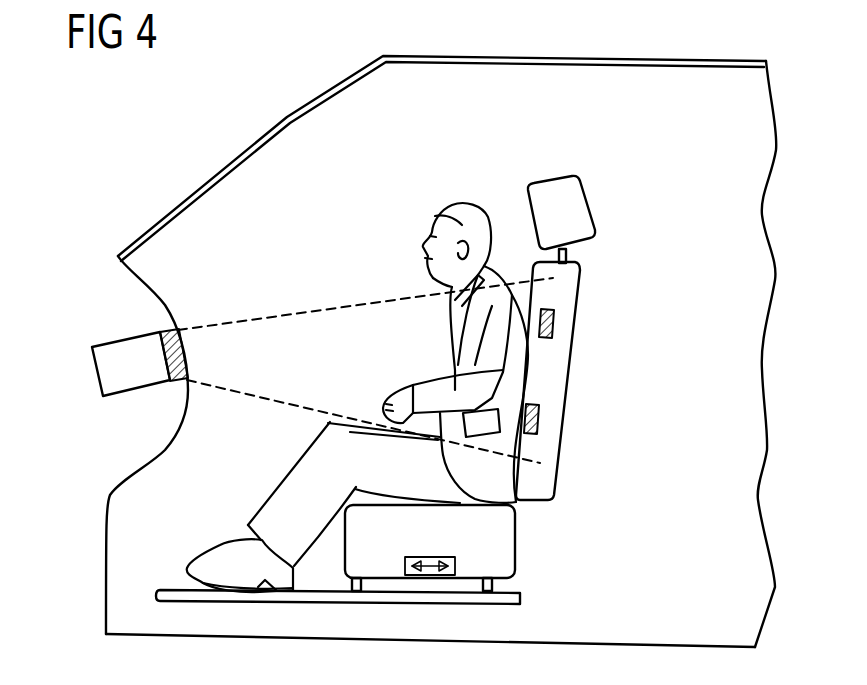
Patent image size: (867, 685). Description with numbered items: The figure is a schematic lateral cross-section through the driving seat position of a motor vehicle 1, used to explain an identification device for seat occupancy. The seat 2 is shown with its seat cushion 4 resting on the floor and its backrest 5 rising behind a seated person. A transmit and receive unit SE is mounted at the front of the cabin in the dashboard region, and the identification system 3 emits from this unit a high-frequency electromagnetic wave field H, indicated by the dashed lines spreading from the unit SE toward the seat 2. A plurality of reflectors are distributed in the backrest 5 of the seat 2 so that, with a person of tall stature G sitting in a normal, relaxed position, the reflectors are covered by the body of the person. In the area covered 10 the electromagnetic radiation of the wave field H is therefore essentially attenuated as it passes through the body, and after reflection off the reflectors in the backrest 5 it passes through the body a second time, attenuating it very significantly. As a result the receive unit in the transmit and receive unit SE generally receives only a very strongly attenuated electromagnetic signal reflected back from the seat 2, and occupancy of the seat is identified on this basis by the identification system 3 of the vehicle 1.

The motor vehicle 1 is at (229, 137).
The seat 2 is at (504, 172).
The identification system 3 is at (122, 432).
The seat cushion 4 is at (500, 563).
The backrest 5 is at (577, 283).
The area covered 10 is at (313, 315).
The transmit and receive unit SE is at (127, 353).
The person of tall stature G is at (455, 342).
The wave field H is at (308, 374).